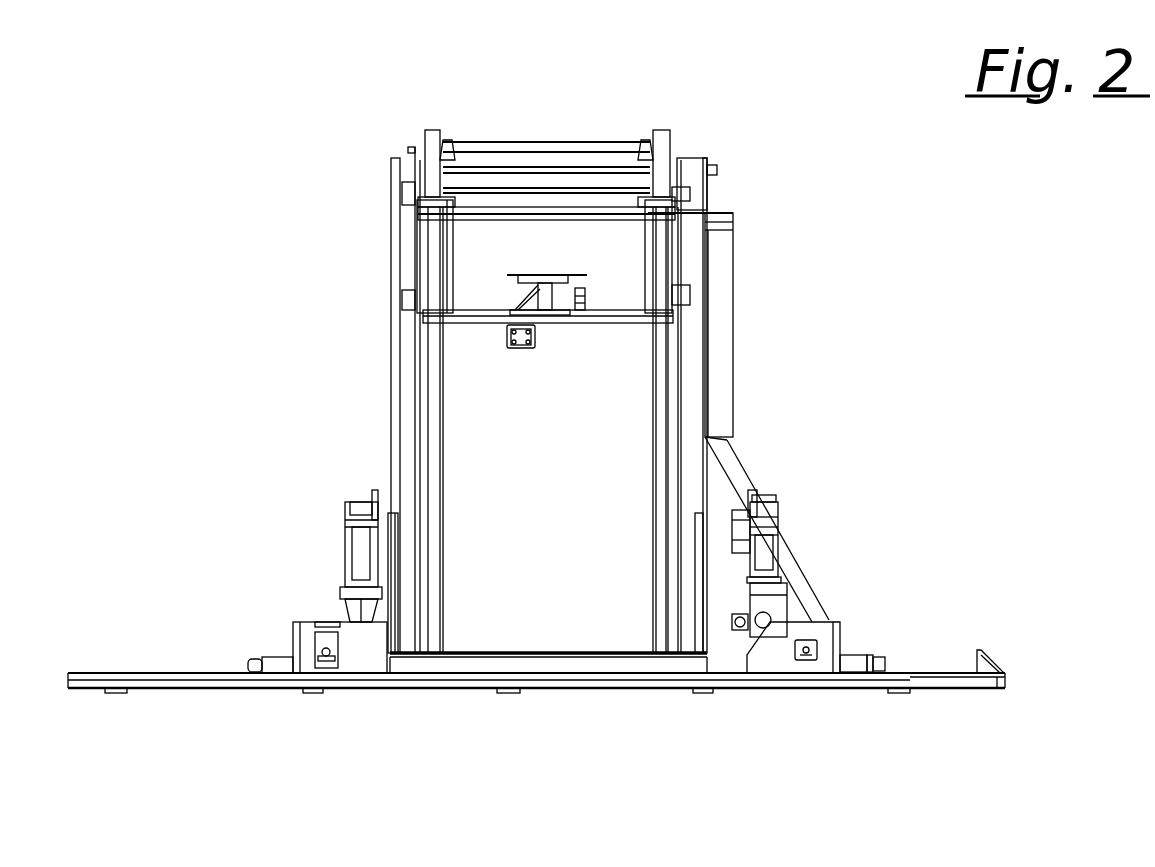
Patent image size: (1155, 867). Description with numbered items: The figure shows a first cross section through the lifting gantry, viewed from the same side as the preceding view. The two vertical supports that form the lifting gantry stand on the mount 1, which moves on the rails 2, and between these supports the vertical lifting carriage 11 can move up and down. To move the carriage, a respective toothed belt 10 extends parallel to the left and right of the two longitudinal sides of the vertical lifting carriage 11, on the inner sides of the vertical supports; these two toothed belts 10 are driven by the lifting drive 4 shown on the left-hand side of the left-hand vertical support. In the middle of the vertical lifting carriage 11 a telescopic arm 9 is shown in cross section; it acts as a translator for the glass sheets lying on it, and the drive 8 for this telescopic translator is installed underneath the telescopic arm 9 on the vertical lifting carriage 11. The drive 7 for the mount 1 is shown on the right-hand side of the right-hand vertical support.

The mount 1 is at (700, 663).
The rails 2 is at (960, 680).
The lifting drive 4 is at (358, 538).
The drive for the mount 7 is at (768, 527).
The drive for the telescopic translator 8 is at (538, 339).
The telescopic arm 9 is at (545, 290).
The toothed belt 10 is at (660, 418).
The vertical lifting carriage 11 is at (450, 262).